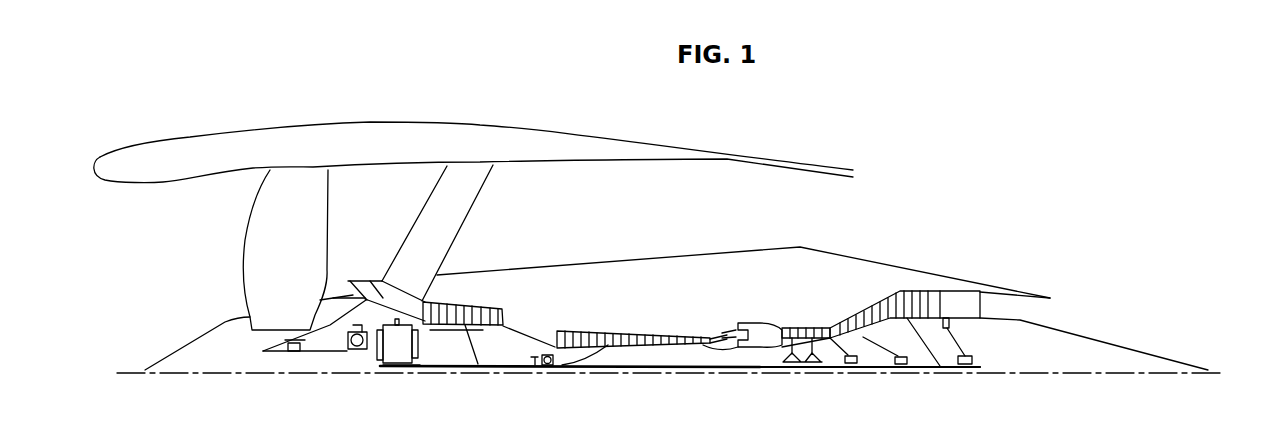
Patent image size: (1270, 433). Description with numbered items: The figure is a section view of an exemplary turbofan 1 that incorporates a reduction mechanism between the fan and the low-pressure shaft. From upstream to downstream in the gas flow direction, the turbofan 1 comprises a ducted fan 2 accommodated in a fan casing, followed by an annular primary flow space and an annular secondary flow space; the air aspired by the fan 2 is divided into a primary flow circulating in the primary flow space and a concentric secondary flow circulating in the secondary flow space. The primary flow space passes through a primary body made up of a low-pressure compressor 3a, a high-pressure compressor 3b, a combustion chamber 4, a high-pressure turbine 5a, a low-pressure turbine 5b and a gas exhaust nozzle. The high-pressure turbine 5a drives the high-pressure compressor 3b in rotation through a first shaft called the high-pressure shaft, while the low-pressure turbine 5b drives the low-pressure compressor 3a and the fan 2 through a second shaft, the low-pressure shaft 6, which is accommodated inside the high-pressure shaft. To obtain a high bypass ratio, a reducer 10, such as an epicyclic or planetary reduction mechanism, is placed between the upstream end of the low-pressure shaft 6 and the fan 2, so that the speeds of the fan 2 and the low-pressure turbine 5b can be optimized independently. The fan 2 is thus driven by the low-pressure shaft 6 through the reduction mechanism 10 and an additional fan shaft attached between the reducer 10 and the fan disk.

The turbofan 1 is at (936, 160).
The ducted fan 2 is at (257, 246).
The low-pressure compressor 3a is at (458, 318).
The high-pressure compressor 3b is at (609, 342).
The combustion chamber 4 is at (760, 331).
The high-pressure turbine 5a is at (802, 322).
The low-pressure turbine 5b is at (908, 300).
The low-pressure shaft 6 is at (930, 367).
The reducer 10 is at (397, 353).